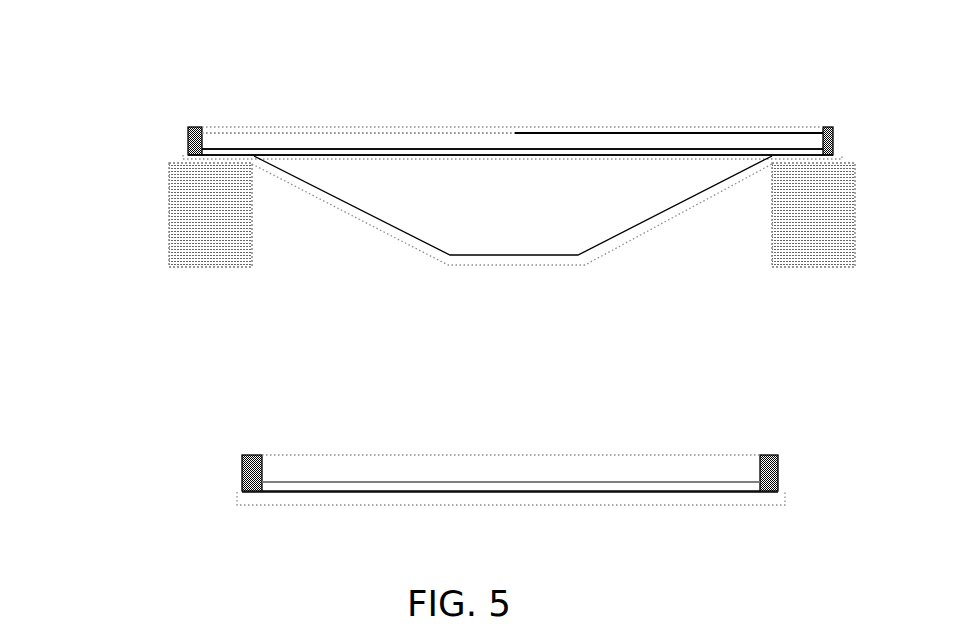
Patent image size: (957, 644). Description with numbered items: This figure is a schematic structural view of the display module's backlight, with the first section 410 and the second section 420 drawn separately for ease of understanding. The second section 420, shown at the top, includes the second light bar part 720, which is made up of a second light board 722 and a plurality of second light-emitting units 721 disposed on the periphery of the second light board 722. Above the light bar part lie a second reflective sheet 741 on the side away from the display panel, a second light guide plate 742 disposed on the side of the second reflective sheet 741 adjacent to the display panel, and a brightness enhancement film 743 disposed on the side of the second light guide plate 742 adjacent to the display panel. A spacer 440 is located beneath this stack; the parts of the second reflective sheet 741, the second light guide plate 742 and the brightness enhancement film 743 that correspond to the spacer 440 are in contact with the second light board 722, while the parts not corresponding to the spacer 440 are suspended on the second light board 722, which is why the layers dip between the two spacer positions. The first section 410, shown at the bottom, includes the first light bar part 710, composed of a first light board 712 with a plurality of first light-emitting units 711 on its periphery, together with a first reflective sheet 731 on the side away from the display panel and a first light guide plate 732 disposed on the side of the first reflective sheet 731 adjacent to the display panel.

The second section 420 is at (100, 60).
The second light bar part 720 is at (103, 108).
The second light-emitting units 721 is at (188, 140).
The second light board 722 is at (183, 157).
The brightness enhancement film 743 is at (325, 127).
The second light guide plate 742 is at (450, 133).
The second reflective sheet 741 is at (532, 149).
The spacer 440 is at (169, 243).
The first section 410 is at (232, 400).
The first light bar part 710 is at (166, 457).
The first light-emitting units 711 is at (242, 474).
The first light board 712 is at (237, 496).
The first light guide plate 732 is at (290, 455).
The first reflective sheet 731 is at (337, 492).